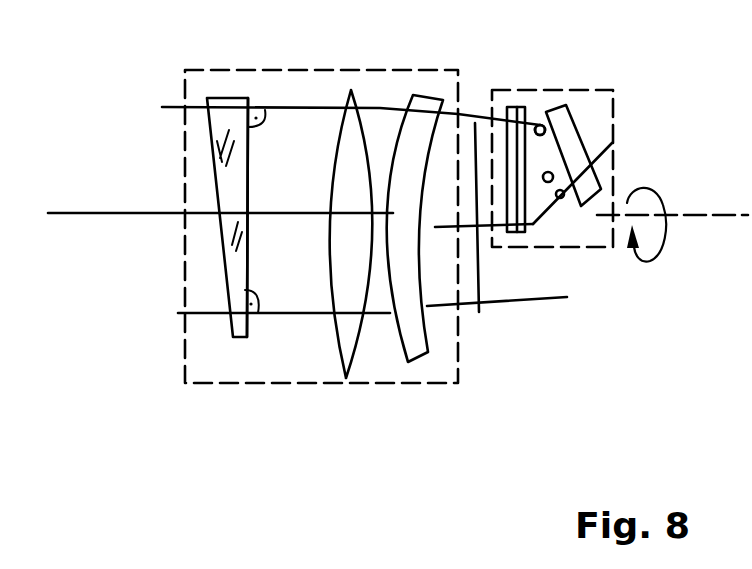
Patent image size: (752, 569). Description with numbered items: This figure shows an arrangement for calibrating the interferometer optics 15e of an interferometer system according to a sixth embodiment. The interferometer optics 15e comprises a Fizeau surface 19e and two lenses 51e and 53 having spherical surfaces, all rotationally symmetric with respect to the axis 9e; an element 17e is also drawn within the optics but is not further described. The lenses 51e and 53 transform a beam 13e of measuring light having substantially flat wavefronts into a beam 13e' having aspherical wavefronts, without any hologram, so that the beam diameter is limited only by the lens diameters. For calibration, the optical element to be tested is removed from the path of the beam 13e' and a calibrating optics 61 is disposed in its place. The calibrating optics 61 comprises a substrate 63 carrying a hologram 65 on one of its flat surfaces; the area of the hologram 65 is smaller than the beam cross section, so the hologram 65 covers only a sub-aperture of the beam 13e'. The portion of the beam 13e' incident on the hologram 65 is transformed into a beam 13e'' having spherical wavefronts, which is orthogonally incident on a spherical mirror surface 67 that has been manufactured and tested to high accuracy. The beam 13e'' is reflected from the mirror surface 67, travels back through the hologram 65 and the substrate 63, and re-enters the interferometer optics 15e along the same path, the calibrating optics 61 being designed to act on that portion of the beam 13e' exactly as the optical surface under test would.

The axis 9e is at (102, 213).
The beam of measuring light 13e is at (364, 273).
The beam having aspherical wavefronts 13e' is at (484, 264).
The beam having spherical wavefronts 13e'' is at (540, 71).
The interferometer optics 15e is at (380, 68).
The wedge prism 17e is at (206, 98).
The Fizeau surface 19e is at (249, 99).
The lens 51e is at (346, 378).
The lens 53 is at (430, 360).
The calibrating optics 61 is at (603, 87).
The substrate 63 is at (517, 236).
The hologram 65 is at (564, 201).
The spherical mirror surface 67 is at (612, 143).